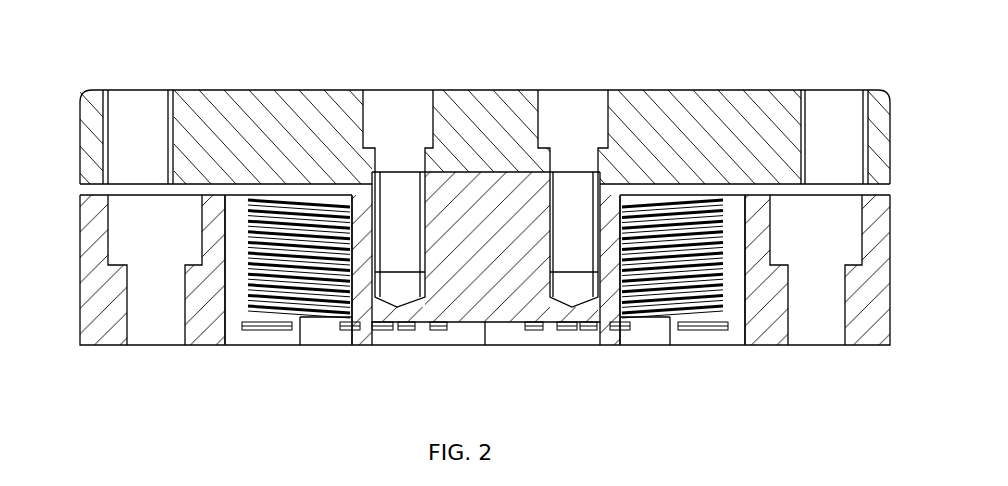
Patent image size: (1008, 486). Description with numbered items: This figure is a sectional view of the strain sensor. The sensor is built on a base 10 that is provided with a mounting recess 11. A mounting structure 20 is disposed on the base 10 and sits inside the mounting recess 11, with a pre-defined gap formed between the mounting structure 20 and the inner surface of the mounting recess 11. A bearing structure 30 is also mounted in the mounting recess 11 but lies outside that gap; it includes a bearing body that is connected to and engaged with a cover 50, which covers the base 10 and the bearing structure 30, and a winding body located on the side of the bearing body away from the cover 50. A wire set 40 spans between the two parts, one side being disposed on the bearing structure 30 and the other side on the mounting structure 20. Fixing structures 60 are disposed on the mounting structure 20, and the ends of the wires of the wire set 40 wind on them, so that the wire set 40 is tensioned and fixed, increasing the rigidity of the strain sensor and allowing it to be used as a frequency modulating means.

The base 10 is at (80, 205).
The mounting recess 11 is at (735, 215).
The mounting structure 20 is at (232, 228).
The bearing structure 30 is at (502, 205).
The wire set 40 is at (680, 200).
The cover 50 is at (288, 117).
The fixing structures 60 is at (718, 328).